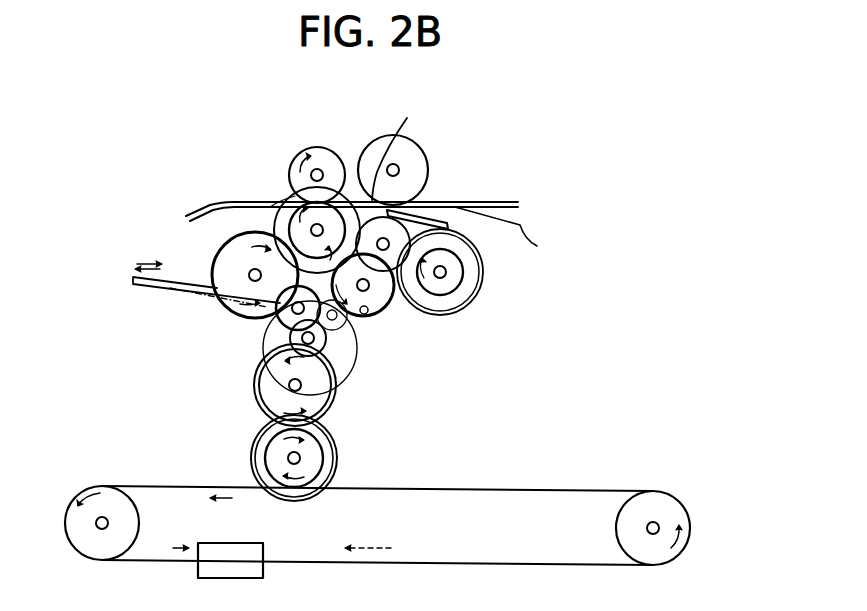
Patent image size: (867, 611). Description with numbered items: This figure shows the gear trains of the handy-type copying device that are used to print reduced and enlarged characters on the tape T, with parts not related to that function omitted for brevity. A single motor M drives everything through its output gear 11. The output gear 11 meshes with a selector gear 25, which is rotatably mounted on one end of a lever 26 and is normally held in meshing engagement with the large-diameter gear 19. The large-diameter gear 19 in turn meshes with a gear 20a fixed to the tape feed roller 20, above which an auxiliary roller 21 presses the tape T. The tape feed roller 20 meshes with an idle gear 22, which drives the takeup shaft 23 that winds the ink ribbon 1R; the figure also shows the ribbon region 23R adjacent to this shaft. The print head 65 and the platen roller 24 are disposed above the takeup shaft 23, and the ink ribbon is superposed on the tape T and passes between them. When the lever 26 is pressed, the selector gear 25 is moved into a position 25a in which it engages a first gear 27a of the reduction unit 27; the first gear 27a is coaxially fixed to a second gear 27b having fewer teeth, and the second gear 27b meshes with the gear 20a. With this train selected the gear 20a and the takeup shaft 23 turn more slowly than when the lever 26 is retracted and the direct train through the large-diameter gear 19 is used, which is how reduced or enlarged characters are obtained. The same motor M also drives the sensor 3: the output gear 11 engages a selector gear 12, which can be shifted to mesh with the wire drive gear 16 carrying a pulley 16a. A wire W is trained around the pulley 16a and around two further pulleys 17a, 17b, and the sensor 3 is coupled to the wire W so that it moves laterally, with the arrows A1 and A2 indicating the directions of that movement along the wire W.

The tape T is at (192, 212).
The belt run line 1R is at (512, 233).
The auxiliary roller 21 is at (317, 155).
The platen roller 24 is at (410, 162).
The idle gear 22 is at (399, 147).
The tape feed roller 20 is at (302, 232).
The gear 20a is at (270, 207).
The print head 65 is at (443, 212).
The large-diameter gear 19 is at (230, 258).
The lever 26 is at (195, 293).
The takeup shaft 23 is at (457, 270).
The roller sleeve 23R is at (477, 293).
The developing roller 27 is at (437, 310).
The first gear 27a is at (416, 353).
The second gear 27b is at (370, 317).
The selector gear 25 is at (276, 325).
The position of selector gear 25a is at (358, 356).
The output gear 11 is at (374, 374).
The motor M is at (334, 366).
The selector gear 12 is at (256, 388).
The wire drive gear 16 is at (252, 458).
The pulley 16a is at (313, 458).
The wire W is at (540, 488).
The pulley 17a is at (103, 547).
The pulley 17b is at (652, 552).
The sensor 3 is at (252, 554).
The direction arrow A1 is at (167, 548).
The direction arrow A2 is at (385, 548).